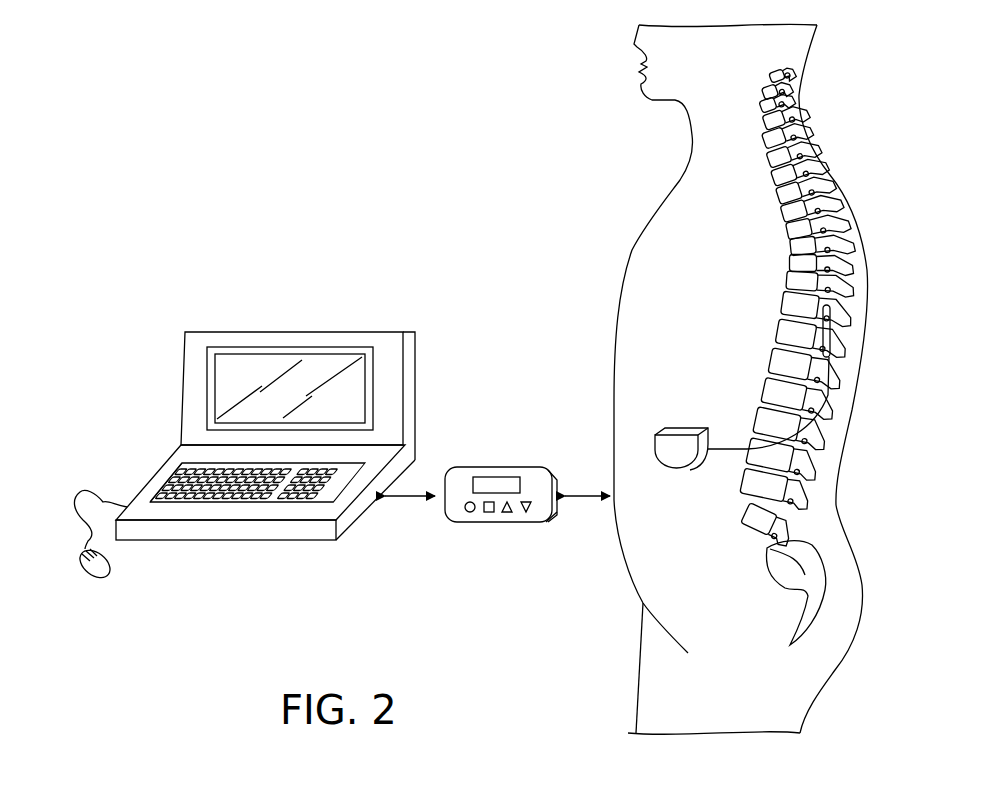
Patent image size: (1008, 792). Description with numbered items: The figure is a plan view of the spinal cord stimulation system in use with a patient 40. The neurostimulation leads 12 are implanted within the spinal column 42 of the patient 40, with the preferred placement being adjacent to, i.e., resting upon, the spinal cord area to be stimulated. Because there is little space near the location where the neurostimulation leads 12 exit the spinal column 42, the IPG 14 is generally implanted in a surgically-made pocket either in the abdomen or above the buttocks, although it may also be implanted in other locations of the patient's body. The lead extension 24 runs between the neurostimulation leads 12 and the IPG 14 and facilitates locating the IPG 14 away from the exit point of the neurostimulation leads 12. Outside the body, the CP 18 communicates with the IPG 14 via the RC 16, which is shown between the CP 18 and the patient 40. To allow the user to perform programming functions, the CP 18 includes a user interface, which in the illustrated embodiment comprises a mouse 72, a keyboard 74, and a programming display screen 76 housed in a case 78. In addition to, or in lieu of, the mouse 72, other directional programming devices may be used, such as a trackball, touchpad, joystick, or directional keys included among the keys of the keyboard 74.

The neurostimulation leads 12 is at (842, 333).
The IPG 14 is at (680, 458).
The RC 16 is at (522, 437).
The CP 18 is at (284, 425).
The lead extension 24 is at (828, 405).
The patient 40 is at (628, 256).
The spinal column 42 is at (788, 312).
The mouse 72 is at (85, 568).
The keyboard 74 is at (227, 503).
The programming display screen 76 is at (373, 388).
The case 78 is at (160, 470).